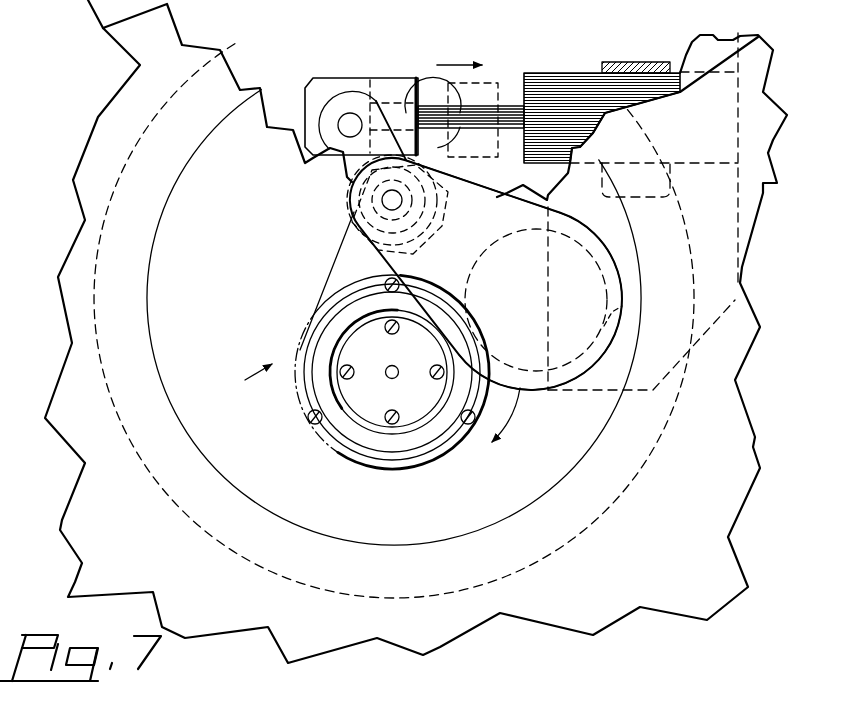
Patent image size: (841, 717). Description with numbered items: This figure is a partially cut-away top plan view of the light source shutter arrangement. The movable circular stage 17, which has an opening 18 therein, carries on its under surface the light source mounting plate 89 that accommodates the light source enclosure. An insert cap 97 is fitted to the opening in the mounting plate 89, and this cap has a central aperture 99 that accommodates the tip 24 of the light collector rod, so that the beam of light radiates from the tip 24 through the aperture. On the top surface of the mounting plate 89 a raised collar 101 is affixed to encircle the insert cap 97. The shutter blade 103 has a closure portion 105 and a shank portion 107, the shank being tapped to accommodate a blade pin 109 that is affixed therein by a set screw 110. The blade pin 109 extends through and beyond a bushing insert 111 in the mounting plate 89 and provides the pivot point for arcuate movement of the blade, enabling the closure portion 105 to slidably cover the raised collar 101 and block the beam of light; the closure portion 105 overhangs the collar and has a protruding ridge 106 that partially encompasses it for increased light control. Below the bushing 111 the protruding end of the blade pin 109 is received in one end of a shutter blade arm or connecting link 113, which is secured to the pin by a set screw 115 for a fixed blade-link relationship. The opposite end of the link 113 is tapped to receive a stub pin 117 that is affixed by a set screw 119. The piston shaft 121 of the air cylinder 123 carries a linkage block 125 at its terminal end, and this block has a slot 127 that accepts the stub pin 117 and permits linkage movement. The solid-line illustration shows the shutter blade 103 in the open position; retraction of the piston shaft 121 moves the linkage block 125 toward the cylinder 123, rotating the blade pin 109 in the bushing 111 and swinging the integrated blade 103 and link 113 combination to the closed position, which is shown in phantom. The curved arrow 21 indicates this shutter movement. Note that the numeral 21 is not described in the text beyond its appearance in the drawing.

The movable circular stage 17 is at (87, 483).
The opening 18 is at (176, 233).
The light source mounting plate 89 is at (394, 321).
The direction of rotation arrow 21 is at (244, 379).
The tip 24 is at (395, 370).
The insert cap 97 is at (362, 352).
The central aperture 99 is at (395, 378).
The raised collar 101 is at (360, 440).
The shutter blade 103 is at (606, 240).
The closure portion 105 is at (572, 288).
The protruding ridge 106 is at (628, 304).
The shank portion 107 is at (383, 246).
The blade pin 109 is at (381, 199).
The set screw 110 is at (356, 183).
The bushing insert 111 is at (347, 220).
The shutter blade arm or connecting link 113 is at (322, 115).
The set screw 115 is at (437, 173).
The stub pin 117 is at (350, 113).
The set screw 119 is at (380, 103).
The piston shaft 121 is at (506, 106).
The air cylinder 123 is at (566, 72).
The linkage block 125 is at (330, 79).
The slot 127 is at (380, 100).